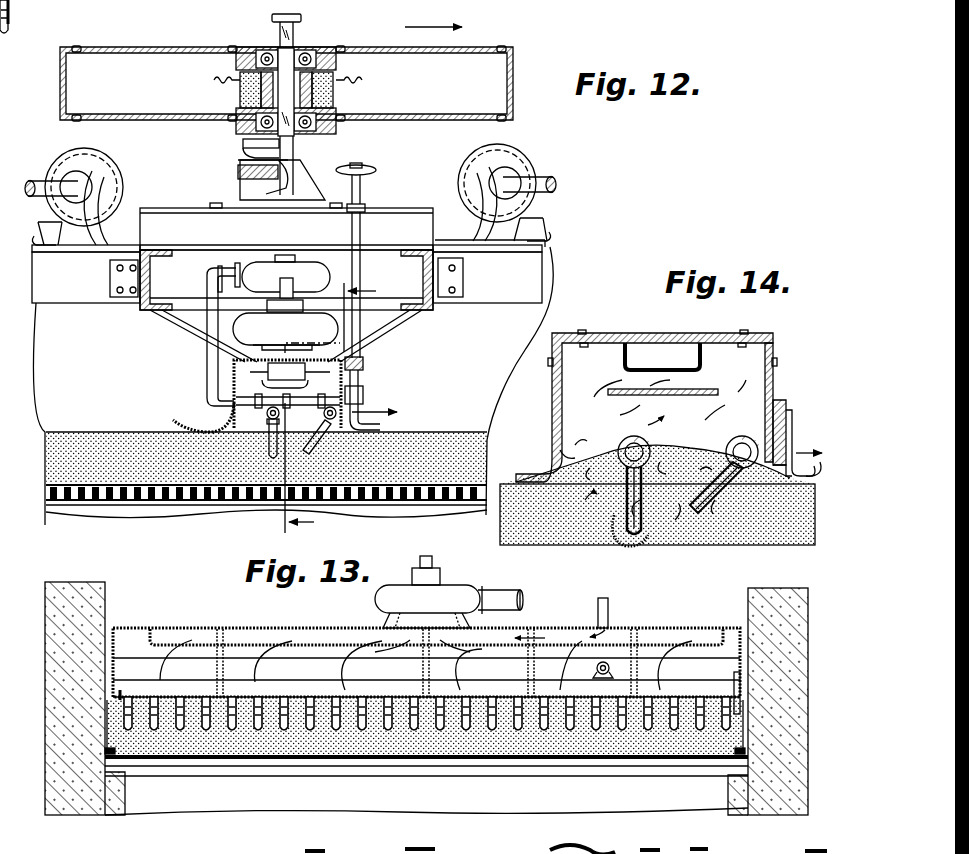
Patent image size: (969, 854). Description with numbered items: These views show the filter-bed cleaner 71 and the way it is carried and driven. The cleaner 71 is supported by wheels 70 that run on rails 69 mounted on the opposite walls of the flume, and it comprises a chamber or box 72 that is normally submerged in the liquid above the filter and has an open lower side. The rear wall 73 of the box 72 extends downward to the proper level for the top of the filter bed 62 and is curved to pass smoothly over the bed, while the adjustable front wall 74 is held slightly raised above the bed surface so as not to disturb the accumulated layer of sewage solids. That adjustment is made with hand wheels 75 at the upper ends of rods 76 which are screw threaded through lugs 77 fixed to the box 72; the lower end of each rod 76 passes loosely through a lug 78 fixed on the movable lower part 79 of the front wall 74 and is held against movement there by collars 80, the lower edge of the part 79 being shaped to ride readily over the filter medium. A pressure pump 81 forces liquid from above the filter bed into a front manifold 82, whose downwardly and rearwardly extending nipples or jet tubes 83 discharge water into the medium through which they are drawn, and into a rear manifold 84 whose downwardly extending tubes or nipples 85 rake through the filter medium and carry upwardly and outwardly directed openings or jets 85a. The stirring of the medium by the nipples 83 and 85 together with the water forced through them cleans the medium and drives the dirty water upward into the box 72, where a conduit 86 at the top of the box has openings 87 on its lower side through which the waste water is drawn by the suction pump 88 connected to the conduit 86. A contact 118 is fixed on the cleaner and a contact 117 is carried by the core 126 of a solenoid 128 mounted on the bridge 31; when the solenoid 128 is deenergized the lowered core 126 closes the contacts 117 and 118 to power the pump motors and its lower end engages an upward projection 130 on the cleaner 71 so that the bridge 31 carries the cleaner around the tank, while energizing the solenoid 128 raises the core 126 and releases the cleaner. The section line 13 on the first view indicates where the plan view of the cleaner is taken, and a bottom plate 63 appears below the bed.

In FIG. 12, the section line 13— 13 is at (343, 411).
In FIG. 12, the bridge 31 is at (140, 47).
In FIG. 13, the filter bed 62 is at (548, 745).
In FIG. 13, the bottom plate 63 is at (476, 758).
In FIG. 12, the rails 69 is at (545, 222).
In FIG. 12, the wheels 70 is at (90, 165).
In FIG. 12, the cleaner 71 is at (397, 215).
In FIG. 12, the chamber or box 72 is at (224, 398).
In FIG. 14, the chamber or box 72 is at (600, 333).
In FIG. 12, the rear wall 73 is at (222, 420).
In FIG. 14, the adjustable front wall 74 is at (786, 400).
In FIG. 12, the hand wheels 75 is at (360, 163).
In FIG. 12, the rods 76 is at (362, 265).
In FIG. 12, the lugs 77 is at (364, 362).
In FIG. 12, the lug 78 is at (366, 396).
In FIG. 12, the movable lower part 79 is at (380, 426).
In FIG. 14, the movable lower part 79 is at (800, 448).
In FIG. 12, the collars 80 is at (366, 392).
In FIG. 12, the pressure pump 81 is at (232, 262).
In FIG. 12, the front manifold 82 is at (323, 413).
In FIG. 14, the front manifold 82 is at (755, 438).
In FIG. 12, the nipples or jet tubes 83 is at (310, 453).
In FIG. 14, the nipples or jet tubes 83 is at (728, 460).
In FIG. 12, the rear manifold 84 is at (266, 413).
In FIG. 13, the rear manifold 84 is at (362, 688).
In FIG. 14, the rear manifold 84 is at (626, 440).
In FIG. 12, the tubes or nipples 85 is at (272, 458).
In FIG. 13, the tubes or nipples 85 is at (330, 735).
In FIG. 14, the tubes or nipples 85 is at (624, 460).
In FIG. 14, the openings or jets 85a is at (649, 531).
In FIG. 12, the conduit 86 is at (270, 376).
In FIG. 14, the conduit 86 is at (700, 362).
In FIG. 12, the openings 87 is at (299, 383).
In FIG. 14, the openings 87 is at (672, 355).
In FIG. 12, the suction pump 88 is at (250, 330).
In FIG. 13, the suction pump 88 is at (460, 595).
In FIG. 12, the contact 117 is at (245, 143).
In FIG. 12, the contact 118 is at (238, 170).
In FIG. 12, the core 126 is at (300, 18).
In FIG. 12, the solenoid 128 is at (228, 94).
In FIG. 12, the upward projections 130 is at (312, 170).